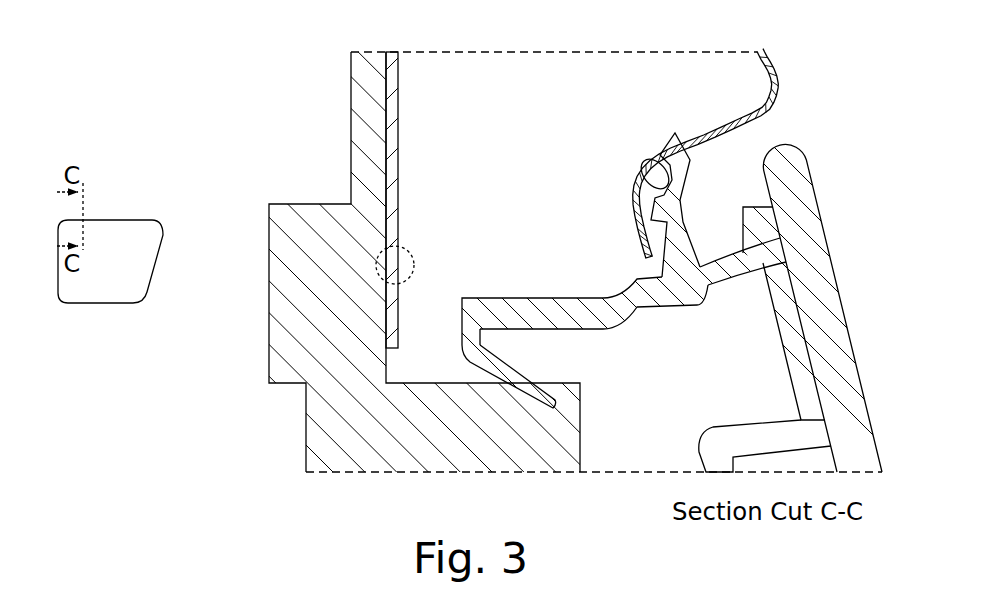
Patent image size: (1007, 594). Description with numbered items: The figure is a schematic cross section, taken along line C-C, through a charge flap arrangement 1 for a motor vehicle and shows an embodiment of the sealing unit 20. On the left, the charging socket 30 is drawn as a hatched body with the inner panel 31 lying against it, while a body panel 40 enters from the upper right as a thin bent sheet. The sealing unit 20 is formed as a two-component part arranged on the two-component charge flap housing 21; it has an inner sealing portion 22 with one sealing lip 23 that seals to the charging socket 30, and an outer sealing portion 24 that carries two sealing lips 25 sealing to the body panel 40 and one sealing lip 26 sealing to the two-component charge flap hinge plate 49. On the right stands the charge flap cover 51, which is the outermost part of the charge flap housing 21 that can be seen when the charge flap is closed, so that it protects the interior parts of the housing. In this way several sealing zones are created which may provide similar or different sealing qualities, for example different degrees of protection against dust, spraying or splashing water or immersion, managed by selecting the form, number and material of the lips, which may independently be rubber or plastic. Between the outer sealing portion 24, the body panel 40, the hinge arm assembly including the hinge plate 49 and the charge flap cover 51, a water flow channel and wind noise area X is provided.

The charge flap arrangement 1 is at (597, 80).
The sealing unit 20 is at (449, 260).
The charge flap housing 21 is at (541, 296).
The inner sealing portion 22 is at (470, 296).
The sealing lip 23 is at (528, 368).
The outer sealing portion 24 is at (693, 222).
The sealing lips 25 is at (665, 162).
The sealing lip 26 is at (722, 283).
The charging socket 30 is at (349, 108).
The inner panel 31 is at (401, 108).
The body panel 40 is at (777, 65).
The charge flap hinge plate 49 is at (708, 429).
The charge flap cover 51 is at (823, 216).
The water flow channel and wind noise area X is at (752, 145).